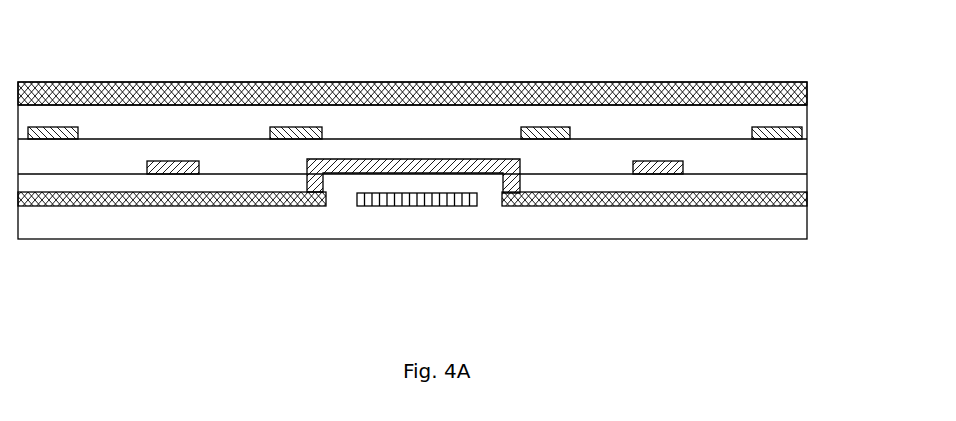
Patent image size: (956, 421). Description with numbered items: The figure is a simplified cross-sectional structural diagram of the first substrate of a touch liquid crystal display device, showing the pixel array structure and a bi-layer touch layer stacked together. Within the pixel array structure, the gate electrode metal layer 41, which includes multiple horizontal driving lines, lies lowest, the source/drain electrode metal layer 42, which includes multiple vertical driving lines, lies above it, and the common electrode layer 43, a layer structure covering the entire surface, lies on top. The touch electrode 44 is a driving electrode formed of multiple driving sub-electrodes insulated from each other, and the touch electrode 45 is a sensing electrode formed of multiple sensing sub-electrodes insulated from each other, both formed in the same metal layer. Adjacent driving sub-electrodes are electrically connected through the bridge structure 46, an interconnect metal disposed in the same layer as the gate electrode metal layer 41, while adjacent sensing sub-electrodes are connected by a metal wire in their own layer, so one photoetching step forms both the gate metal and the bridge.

The gate electrode metal layer 41 is at (167, 168).
The source/drain electrode metal layer 42 is at (55, 132).
The common electrode layer 43 is at (302, 84).
The touch electrode 44 is at (788, 195).
The touch electrode 45 is at (396, 203).
The bridge structure 46 is at (460, 168).